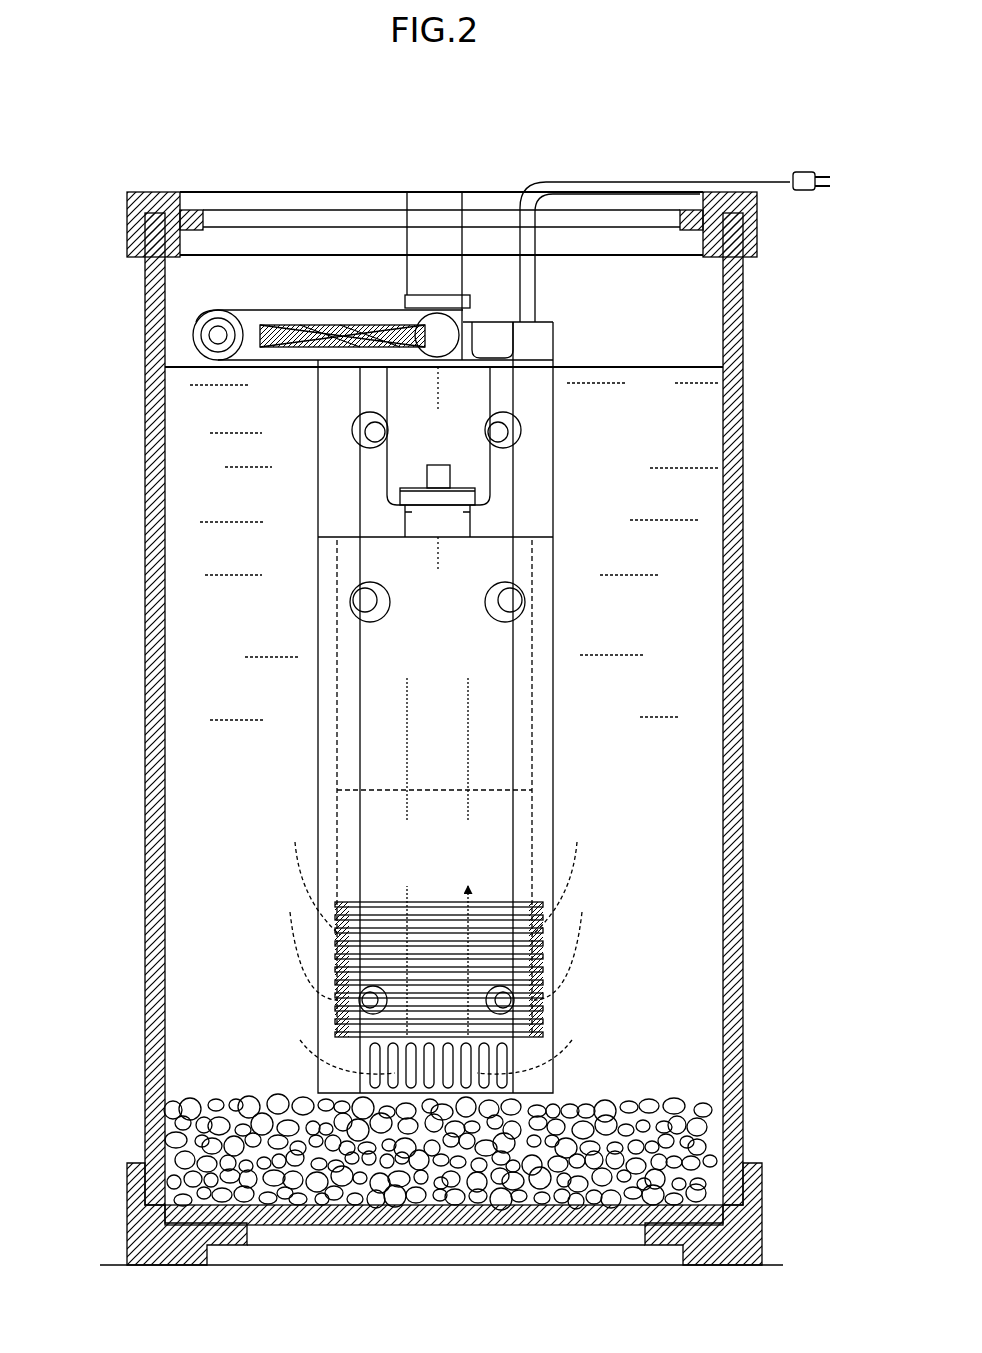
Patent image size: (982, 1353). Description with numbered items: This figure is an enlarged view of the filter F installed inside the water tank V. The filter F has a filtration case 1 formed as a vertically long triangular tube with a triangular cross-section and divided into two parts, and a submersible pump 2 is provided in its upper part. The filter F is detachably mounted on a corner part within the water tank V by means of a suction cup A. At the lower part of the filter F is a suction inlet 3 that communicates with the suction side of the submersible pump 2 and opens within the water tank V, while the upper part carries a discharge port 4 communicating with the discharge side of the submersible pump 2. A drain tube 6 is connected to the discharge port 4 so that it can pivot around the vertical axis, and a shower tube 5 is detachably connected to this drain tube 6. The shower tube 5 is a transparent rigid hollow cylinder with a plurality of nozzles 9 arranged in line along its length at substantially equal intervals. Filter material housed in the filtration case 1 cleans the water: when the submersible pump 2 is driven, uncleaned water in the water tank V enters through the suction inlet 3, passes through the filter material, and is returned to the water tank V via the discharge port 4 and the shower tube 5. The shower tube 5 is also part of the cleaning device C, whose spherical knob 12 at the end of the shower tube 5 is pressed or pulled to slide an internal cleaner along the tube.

The filtration case 1 is at (542, 833).
The submersible pump 2 is at (392, 468).
The suction inlet 3 is at (437, 172).
The discharge port 4 is at (485, 308).
The shower tube 5 is at (355, 320).
The drain tube 6 is at (412, 318).
The nozzles 9 is at (330, 342).
The spherical knob 12 is at (208, 345).
The suction cup A is at (352, 432).
The cleaning device C is at (275, 303).
The filter F is at (560, 737).
The water tank V is at (750, 375).